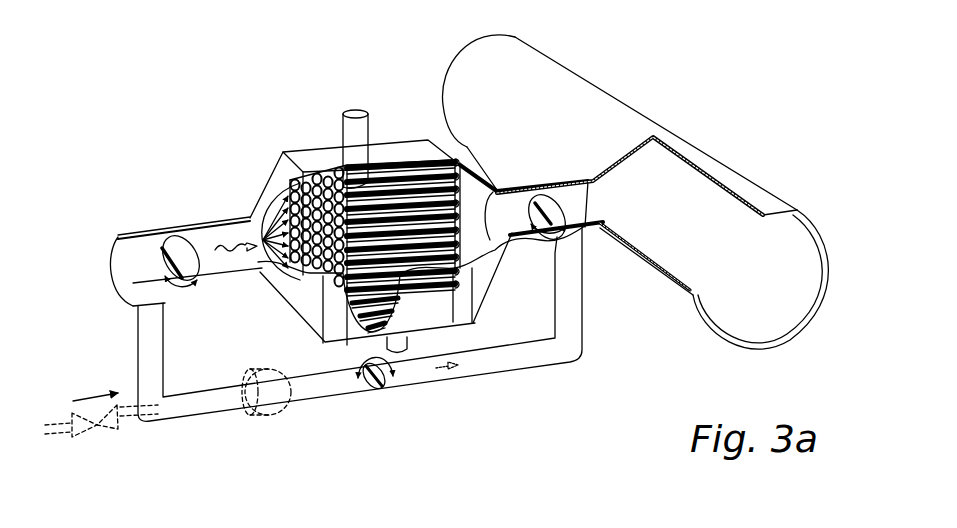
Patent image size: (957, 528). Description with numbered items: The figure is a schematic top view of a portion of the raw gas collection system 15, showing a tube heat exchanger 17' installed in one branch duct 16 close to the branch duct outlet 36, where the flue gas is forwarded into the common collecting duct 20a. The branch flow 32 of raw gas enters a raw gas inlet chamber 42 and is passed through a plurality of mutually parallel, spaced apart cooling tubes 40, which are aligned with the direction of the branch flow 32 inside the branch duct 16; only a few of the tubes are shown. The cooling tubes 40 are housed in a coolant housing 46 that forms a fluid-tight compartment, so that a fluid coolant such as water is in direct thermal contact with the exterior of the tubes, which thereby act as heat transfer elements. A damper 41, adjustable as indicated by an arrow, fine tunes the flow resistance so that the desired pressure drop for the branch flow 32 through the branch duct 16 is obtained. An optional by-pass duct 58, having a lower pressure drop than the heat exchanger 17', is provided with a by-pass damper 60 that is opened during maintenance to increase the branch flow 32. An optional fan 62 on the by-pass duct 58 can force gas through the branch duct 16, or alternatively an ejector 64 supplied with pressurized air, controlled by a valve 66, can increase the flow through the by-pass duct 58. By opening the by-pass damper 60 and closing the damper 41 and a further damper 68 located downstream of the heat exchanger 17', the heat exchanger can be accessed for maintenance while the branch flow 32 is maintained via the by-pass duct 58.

The raw gas collection system 15 is at (246, 54).
The branch duct 16 is at (200, 228).
The tube heat exchanger 17' is at (334, 142).
The common collecting duct 20a is at (700, 153).
The branch flow 32 is at (236, 262).
The branch duct outlet 36 is at (598, 207).
The cooling tubes 40 is at (428, 160).
The damper 41 is at (180, 290).
The raw gas inlet chamber 42 is at (290, 183).
The coolant housing 46 is at (463, 168).
The by-pass duct 58 is at (500, 362).
The by-pass damper 60 is at (383, 377).
The fan 62 is at (283, 412).
The ejector 64 is at (124, 422).
The valve 66 is at (80, 432).
The further damper 68 is at (550, 234).